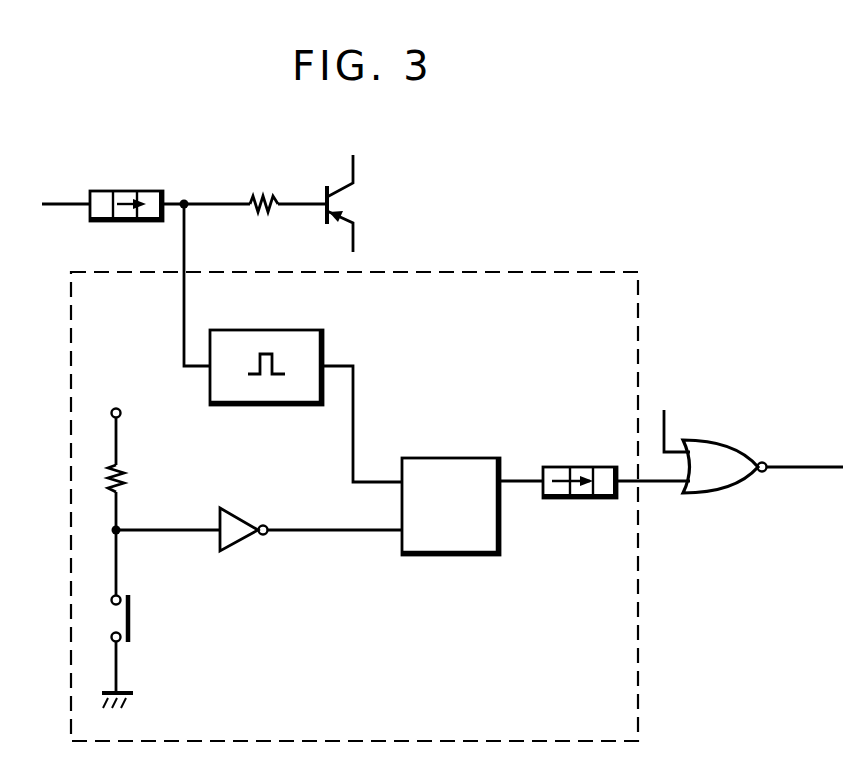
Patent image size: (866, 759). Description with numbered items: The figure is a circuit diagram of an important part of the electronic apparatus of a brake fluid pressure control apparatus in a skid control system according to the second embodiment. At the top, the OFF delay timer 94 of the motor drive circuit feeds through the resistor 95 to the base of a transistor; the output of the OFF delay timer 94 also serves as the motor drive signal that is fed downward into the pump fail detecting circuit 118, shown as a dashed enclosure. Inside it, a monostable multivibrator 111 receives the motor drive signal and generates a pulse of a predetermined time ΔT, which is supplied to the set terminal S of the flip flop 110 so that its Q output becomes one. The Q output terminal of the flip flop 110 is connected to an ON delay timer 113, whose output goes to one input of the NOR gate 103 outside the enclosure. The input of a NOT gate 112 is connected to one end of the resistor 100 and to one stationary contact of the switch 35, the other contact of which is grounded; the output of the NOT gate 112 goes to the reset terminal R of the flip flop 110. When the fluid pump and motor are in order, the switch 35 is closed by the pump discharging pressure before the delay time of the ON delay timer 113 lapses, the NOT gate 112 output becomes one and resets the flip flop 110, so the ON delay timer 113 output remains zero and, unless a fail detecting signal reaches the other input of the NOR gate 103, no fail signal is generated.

The OFF delay timer 94 is at (128, 190).
The resistor 95 is at (272, 195).
The resistor 100 is at (128, 478).
The NOR gate 103 is at (722, 440).
The flip flop 110 is at (437, 457).
The monostable multivibrator 111 is at (250, 329).
The NOT gate 112 is at (228, 507).
The ON delay timer 113 is at (580, 465).
The pump fail detecting circuit 118 is at (436, 266).
The switch 35 is at (134, 601).